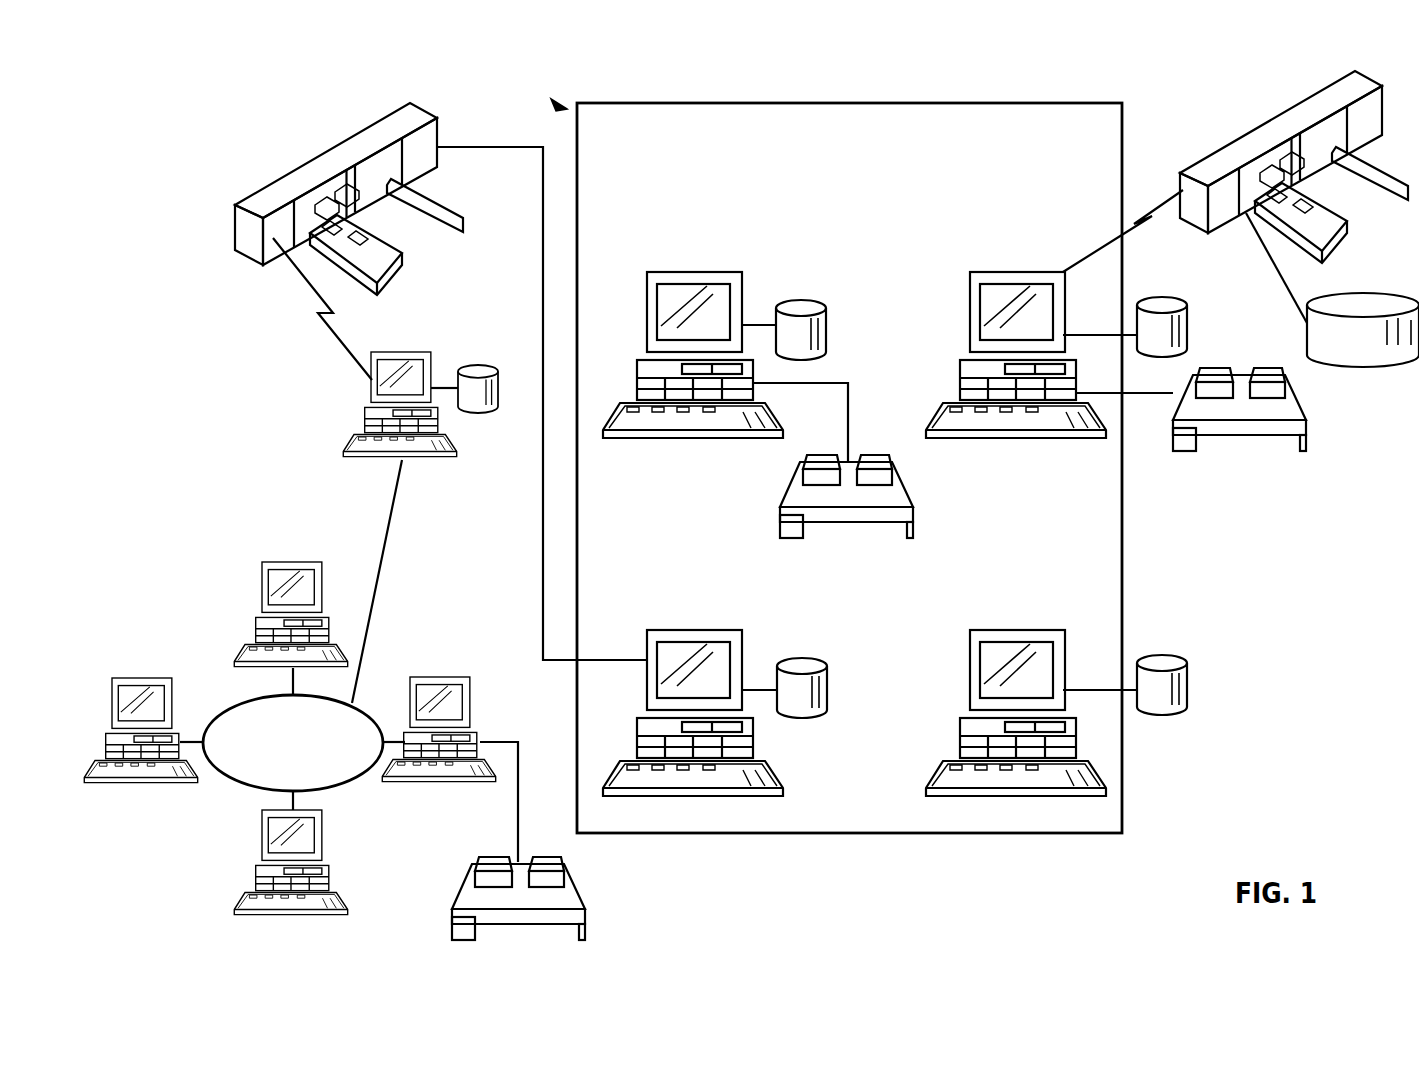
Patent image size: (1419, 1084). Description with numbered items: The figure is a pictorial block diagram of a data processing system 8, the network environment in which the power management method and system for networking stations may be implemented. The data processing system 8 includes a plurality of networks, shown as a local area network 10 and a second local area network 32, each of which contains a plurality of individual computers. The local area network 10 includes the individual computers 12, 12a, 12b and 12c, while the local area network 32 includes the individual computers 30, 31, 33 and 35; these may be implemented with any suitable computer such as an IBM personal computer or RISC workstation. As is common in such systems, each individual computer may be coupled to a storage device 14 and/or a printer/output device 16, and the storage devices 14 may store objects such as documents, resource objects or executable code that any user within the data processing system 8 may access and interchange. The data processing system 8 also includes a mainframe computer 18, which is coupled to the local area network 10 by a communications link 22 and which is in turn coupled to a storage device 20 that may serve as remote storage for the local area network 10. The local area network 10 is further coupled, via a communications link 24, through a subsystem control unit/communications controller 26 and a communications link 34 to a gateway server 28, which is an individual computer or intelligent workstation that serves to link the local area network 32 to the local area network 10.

The data processing system 8 is at (560, 104).
The local area network 10 is at (728, 180).
The individual computer 12 is at (990, 270).
The individual computer 12a is at (667, 270).
The individual computer 12b is at (667, 628).
The individual computer 12c is at (990, 628).
The storage device 14 is at (827, 335).
The printer/output device 16 is at (897, 493).
The mainframe computer 18 is at (1203, 170).
The storage device 20 is at (1362, 353).
The communications link 22 is at (1155, 203).
The communications link 24 is at (542, 290).
The subsystem control unit/communications controller 26 is at (310, 170).
The gateway server 28 is at (415, 352).
The individual computer 30 is at (447, 677).
The individual computer 31 is at (322, 830).
The local area network 32 is at (243, 783).
The individual computer 33 is at (133, 677).
The communications link 34 is at (338, 348).
The individual computer 35 is at (260, 590).